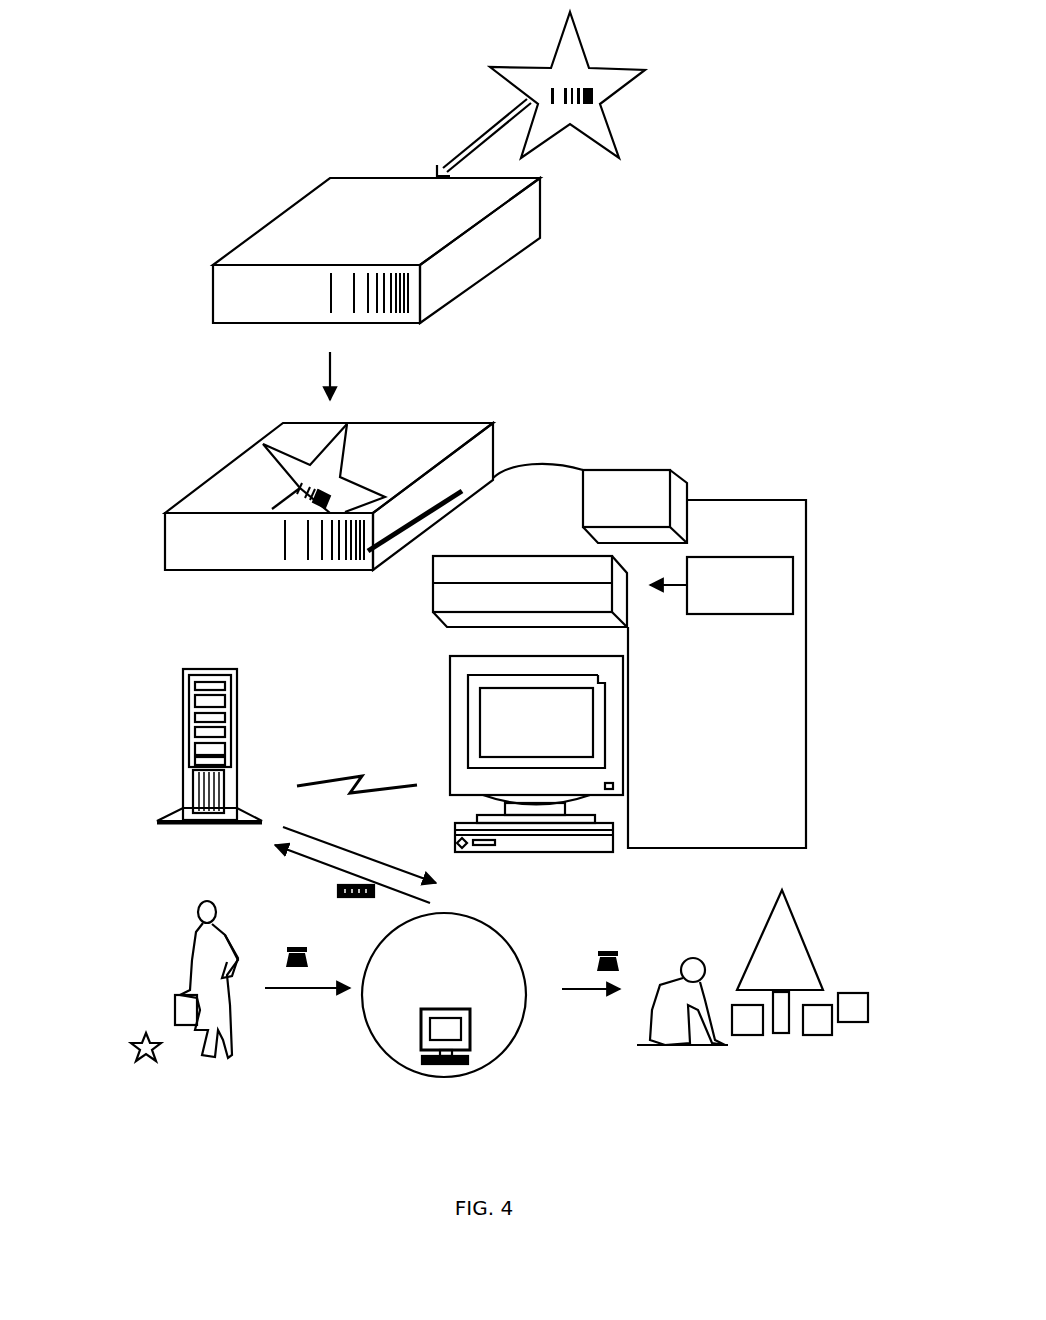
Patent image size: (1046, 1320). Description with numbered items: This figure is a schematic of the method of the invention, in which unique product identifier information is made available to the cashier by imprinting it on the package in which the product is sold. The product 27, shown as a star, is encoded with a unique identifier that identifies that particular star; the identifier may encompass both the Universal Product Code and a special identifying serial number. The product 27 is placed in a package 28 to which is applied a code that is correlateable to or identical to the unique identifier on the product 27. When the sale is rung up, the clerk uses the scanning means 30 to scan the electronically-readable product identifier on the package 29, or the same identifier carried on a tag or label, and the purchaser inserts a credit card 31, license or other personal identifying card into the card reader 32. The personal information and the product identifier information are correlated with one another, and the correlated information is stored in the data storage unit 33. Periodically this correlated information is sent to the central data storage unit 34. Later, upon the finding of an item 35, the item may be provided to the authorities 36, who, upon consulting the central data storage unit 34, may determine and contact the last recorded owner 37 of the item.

The product 27 is at (597, 62).
The package 28 is at (543, 217).
The package 29 is at (490, 393).
The scanning means 30 is at (628, 466).
The credit card 31 is at (742, 554).
The card reader 32 is at (428, 583).
The data storage unit 33 is at (622, 820).
The central data storage unit 34 is at (180, 768).
The item 35 is at (127, 948).
The authorities 36 is at (517, 940).
The last recorded owner 37 is at (810, 918).